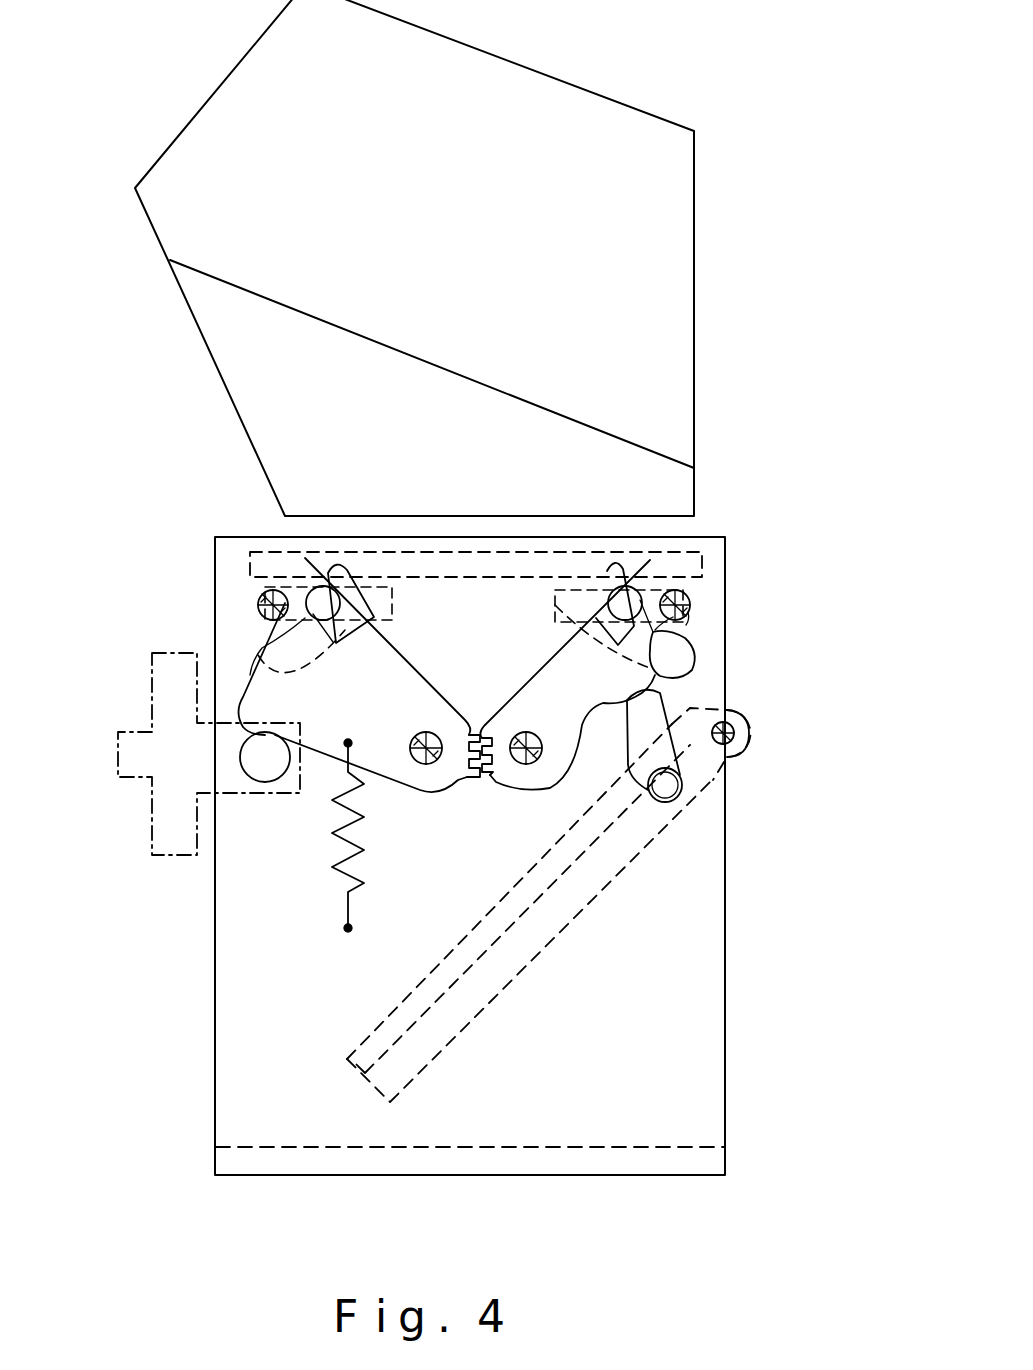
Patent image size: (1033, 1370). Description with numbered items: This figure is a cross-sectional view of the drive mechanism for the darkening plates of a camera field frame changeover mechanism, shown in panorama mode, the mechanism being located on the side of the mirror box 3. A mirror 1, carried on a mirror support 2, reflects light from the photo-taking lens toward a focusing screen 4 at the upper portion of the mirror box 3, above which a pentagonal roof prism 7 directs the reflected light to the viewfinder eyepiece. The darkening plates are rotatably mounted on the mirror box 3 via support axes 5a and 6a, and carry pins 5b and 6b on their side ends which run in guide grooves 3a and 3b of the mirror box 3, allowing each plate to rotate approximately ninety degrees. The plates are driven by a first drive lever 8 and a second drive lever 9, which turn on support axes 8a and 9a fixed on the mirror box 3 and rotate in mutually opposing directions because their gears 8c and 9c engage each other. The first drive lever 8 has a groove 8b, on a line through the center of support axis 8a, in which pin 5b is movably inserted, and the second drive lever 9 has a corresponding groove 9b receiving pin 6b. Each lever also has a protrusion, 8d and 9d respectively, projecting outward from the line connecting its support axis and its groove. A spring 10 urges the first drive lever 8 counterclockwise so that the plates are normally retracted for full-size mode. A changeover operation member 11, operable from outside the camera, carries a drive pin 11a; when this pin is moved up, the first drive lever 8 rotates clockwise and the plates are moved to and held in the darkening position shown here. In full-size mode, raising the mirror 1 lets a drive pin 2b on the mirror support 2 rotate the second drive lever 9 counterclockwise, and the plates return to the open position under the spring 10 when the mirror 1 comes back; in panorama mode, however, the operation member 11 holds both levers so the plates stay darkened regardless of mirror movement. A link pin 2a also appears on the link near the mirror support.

The mirror 1 is at (430, 980).
The mirror support 2 is at (505, 990).
The link pin 2a is at (727, 712).
The drive pin 2b is at (670, 803).
The mirror box 3 is at (727, 985).
The guide groove 3a is at (253, 665).
The guide groove 3b is at (697, 623).
The focusing screen 4 is at (247, 550).
The support axis 5a is at (258, 600).
The pin 5b is at (305, 558).
The support axis 6a is at (690, 604).
The pin 6b is at (652, 562).
The pentagonal roof prism 7 is at (598, 97).
The first drive lever 8 is at (388, 668).
The support axis 8a is at (415, 763).
The groove 8b is at (373, 625).
The gear 8c is at (464, 782).
The protrusion 8d is at (243, 690).
The second drive lever 9 is at (560, 667).
The support axis 9a is at (524, 766).
The groove 9b is at (587, 628).
The gear 9c is at (481, 780).
The protrusion 9d is at (700, 687).
The spring 10 is at (333, 878).
The changeover operation member 11 is at (150, 855).
The drive pin 11a is at (265, 782).